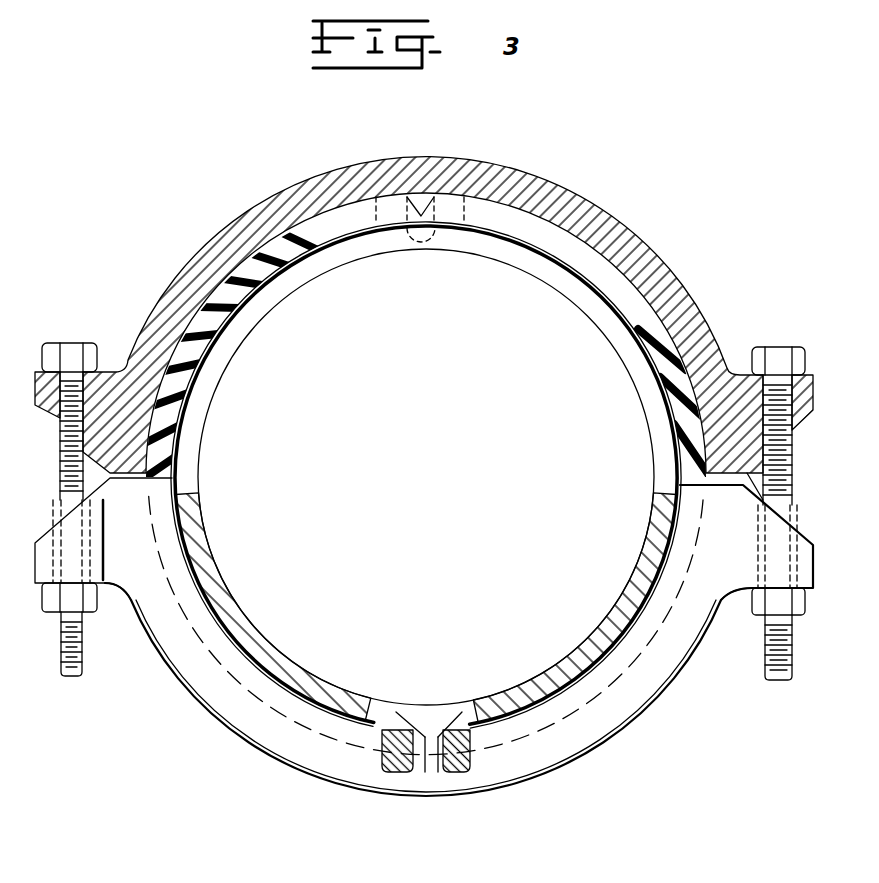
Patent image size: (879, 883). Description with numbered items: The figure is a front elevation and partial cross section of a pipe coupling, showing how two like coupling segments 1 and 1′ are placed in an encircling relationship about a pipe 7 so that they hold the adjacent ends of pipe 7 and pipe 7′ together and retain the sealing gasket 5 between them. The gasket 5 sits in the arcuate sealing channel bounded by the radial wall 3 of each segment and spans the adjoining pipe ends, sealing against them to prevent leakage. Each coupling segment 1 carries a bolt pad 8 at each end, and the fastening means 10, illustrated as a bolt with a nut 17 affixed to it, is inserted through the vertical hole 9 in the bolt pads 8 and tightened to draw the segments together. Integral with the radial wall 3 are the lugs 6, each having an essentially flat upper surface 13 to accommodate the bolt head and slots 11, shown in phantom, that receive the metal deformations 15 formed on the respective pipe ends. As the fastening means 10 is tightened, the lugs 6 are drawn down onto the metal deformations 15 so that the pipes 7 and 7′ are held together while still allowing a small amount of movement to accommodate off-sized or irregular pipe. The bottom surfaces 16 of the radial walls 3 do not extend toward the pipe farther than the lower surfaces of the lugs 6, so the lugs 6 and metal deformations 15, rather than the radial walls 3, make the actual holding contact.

The coupling segment 1 is at (558, 770).
The coupling segment 1′ is at (615, 222).
The radial wall 3 is at (546, 245).
The sealing gasket 5 is at (218, 328).
The lug 6 is at (393, 240).
The pipe 7 is at (206, 386).
The pipe 7′ is at (266, 650).
The bolt pad 8 is at (803, 375).
The hole 9 is at (50, 420).
The fastening means 10 is at (65, 676).
The slot 11 is at (434, 198).
The upper surface 13 is at (445, 765).
The metal deformation 15 is at (410, 197).
The bottom surface 16 is at (322, 241).
The nut 17 is at (95, 598).